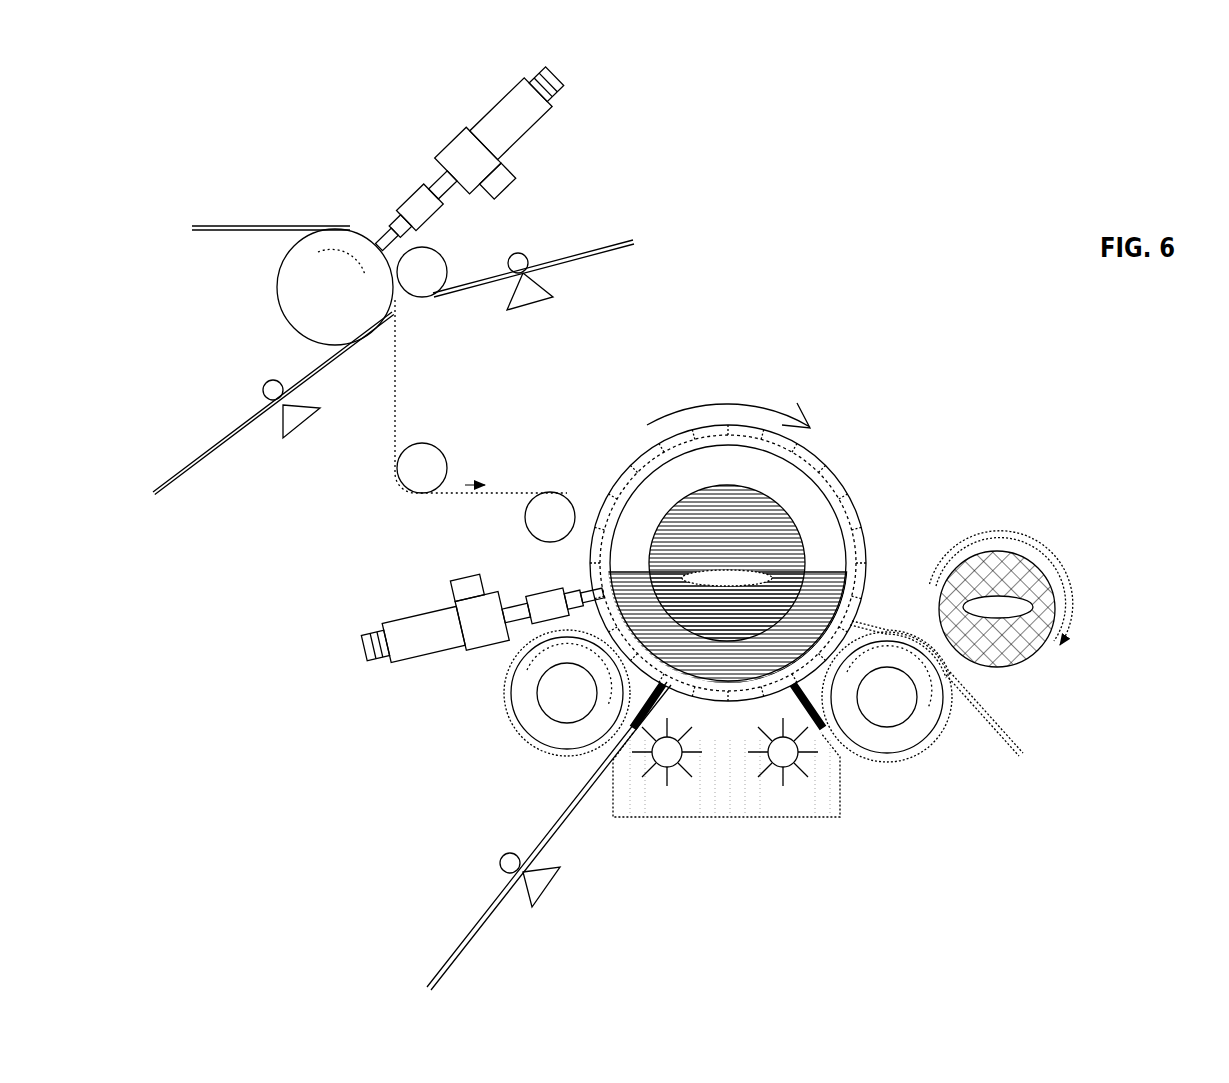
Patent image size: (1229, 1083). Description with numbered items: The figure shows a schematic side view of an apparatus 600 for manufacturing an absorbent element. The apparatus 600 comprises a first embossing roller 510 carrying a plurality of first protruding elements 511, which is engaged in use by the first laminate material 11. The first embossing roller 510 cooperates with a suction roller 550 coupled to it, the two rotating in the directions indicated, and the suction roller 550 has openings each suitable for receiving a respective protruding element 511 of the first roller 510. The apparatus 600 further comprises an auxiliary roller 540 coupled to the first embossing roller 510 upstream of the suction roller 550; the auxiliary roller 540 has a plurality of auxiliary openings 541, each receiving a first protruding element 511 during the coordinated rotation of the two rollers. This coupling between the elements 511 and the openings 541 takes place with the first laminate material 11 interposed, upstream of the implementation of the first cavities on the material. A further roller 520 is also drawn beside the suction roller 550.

The apparatus 600 is at (897, 197).
The suction roller 550 is at (850, 476).
The nip roller 520 is at (506, 744).
The first embossing roller 510 is at (913, 765).
The first protruding element 511 is at (953, 675).
The auxiliary roller 540 is at (1090, 570).
The auxiliary opening 541 is at (953, 553).
The first laminate material 11 is at (1028, 753).